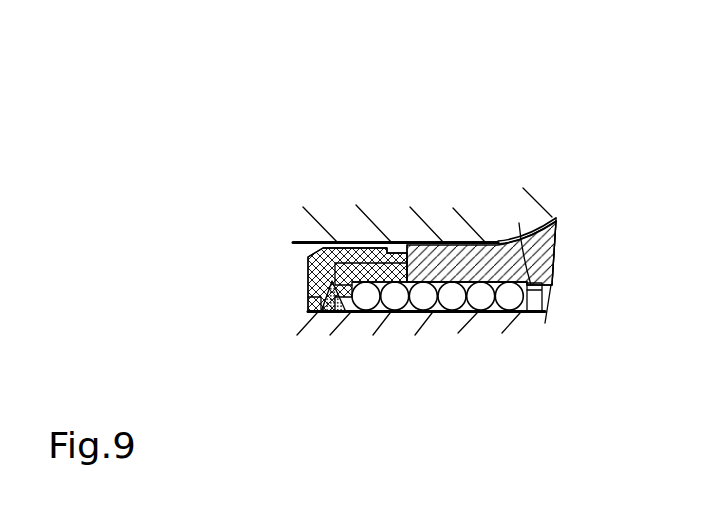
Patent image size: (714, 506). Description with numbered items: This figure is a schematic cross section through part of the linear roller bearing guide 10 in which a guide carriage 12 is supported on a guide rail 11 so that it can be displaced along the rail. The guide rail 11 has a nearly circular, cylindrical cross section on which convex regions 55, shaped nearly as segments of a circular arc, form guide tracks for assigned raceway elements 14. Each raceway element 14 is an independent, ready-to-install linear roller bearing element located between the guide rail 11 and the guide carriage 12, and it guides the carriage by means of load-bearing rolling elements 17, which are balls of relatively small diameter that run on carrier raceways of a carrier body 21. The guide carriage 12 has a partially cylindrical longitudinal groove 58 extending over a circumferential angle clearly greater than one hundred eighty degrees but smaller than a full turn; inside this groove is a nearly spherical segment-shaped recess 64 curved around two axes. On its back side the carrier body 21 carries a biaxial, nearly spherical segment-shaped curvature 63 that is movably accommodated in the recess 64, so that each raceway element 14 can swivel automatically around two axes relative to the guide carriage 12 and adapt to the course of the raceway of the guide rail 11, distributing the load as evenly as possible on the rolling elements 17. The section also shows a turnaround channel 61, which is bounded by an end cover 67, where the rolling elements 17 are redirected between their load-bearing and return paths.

The linear roller bearing guide 10 is at (378, 132).
The guide rail 11 is at (358, 330).
The guide carriage 12 is at (428, 213).
The raceway element 14 is at (553, 290).
The load-bearing rolling elements 17 is at (416, 314).
The carrier body 21 is at (450, 243).
The convex regions 55 is at (445, 317).
The partially cylindrical longitudinal groove 58 is at (472, 242).
The turnaround channel 61 is at (308, 243).
The curvature 63 is at (522, 313).
The recess 64 is at (536, 219).
The end cover 67 is at (308, 279).